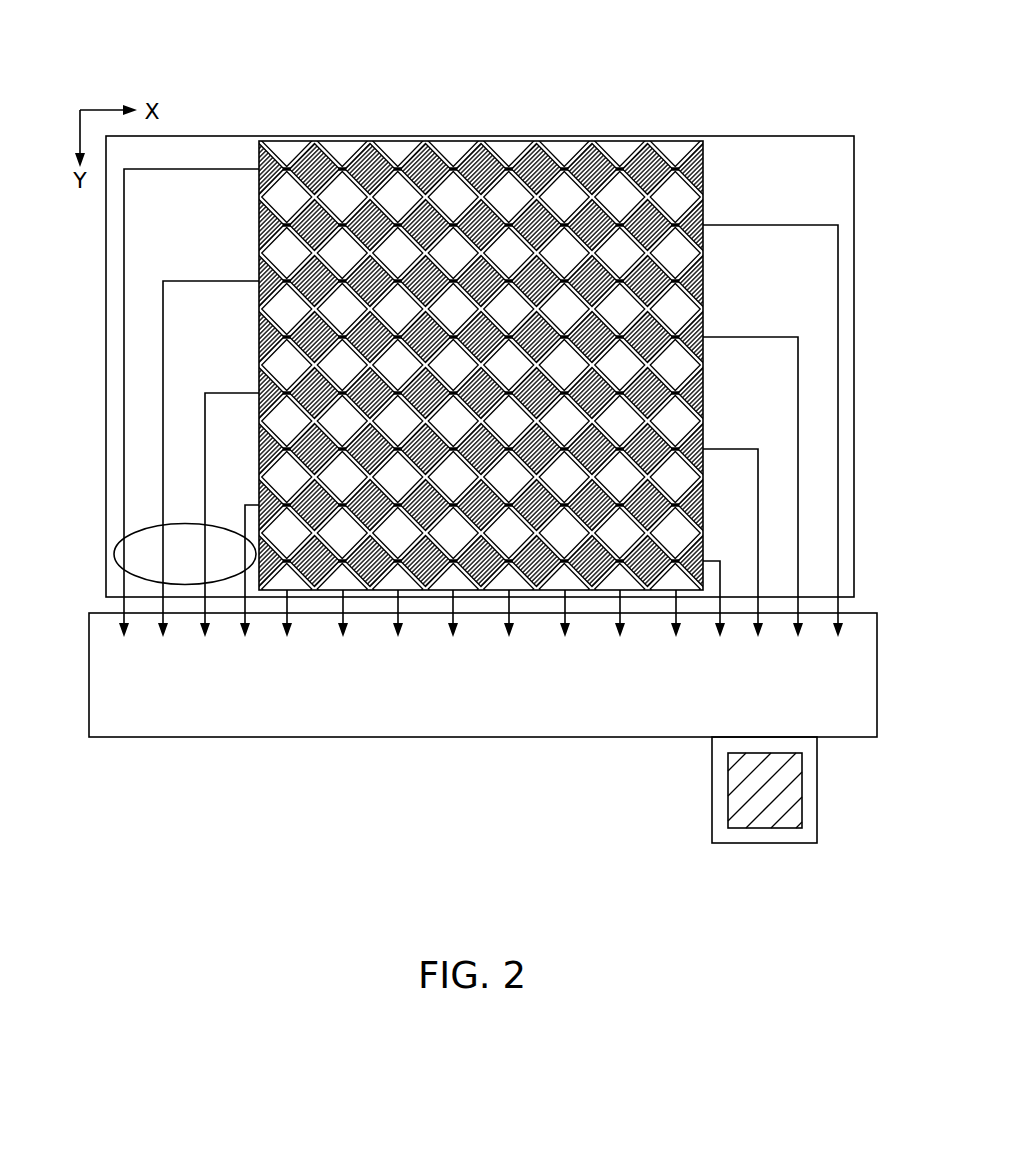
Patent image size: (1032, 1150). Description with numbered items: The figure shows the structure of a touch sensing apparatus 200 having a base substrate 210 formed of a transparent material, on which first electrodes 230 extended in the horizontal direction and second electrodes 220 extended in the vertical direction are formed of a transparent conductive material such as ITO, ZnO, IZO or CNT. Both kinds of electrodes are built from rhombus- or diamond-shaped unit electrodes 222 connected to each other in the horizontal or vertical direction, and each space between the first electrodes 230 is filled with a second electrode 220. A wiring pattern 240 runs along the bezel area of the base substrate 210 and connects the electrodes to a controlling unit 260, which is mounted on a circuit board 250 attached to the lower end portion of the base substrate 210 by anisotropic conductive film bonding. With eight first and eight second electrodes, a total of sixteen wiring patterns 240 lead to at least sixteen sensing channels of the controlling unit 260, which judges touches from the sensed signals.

The touch sensing apparatus 200 is at (699, 113).
The base substrate 210 is at (345, 135).
The second electrodes 220 is at (453, 147).
The unit electrodes 222 is at (592, 147).
The first electrodes 230 is at (295, 160).
The wiring pattern 240 is at (127, 533).
The circuit board 250 is at (541, 716).
The controlling unit 260 is at (762, 817).